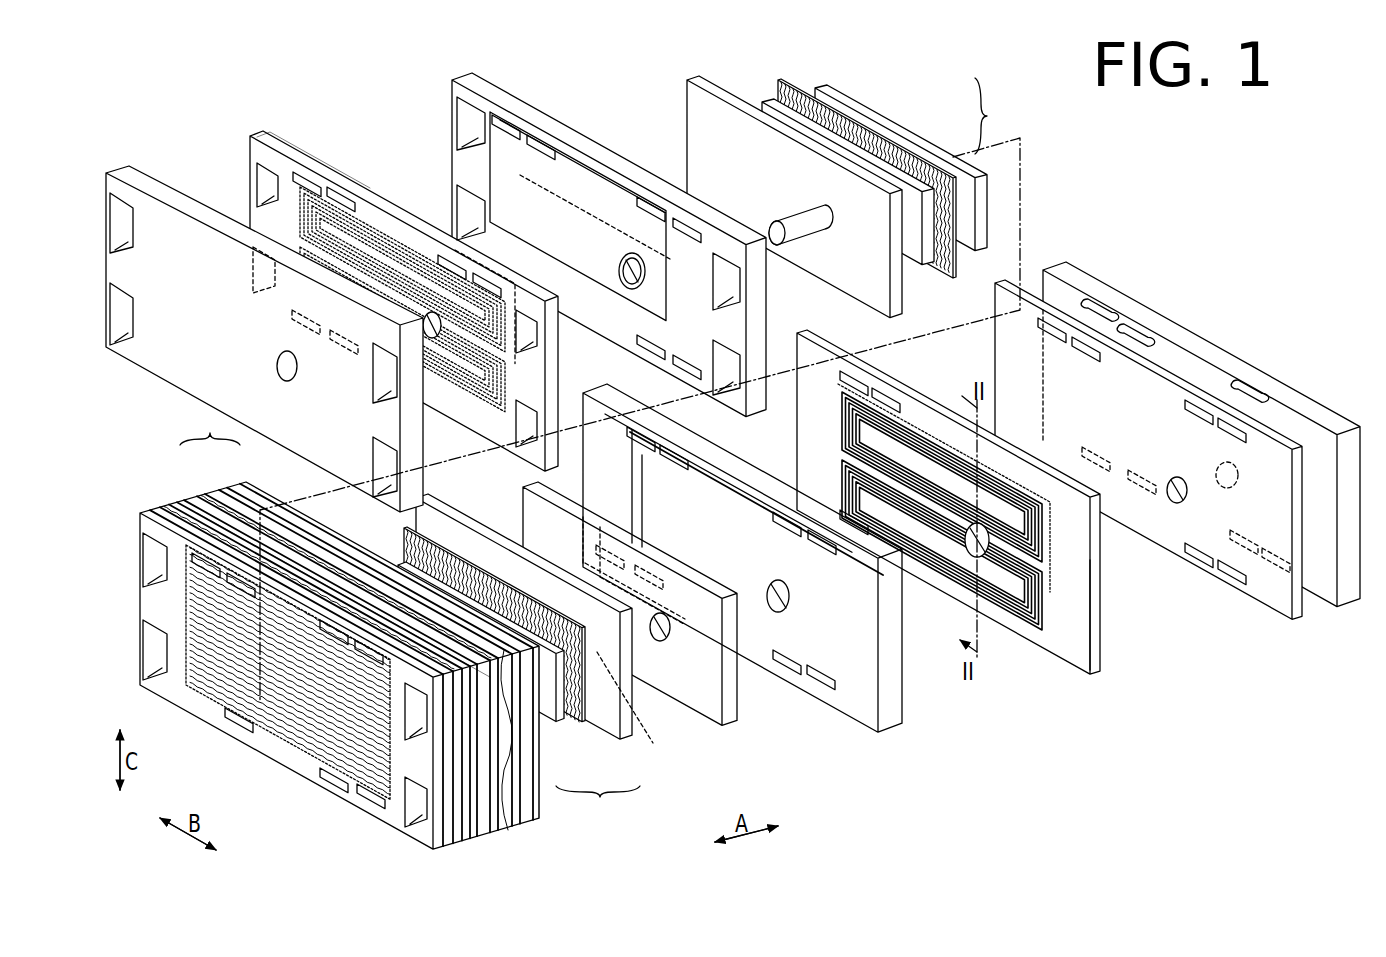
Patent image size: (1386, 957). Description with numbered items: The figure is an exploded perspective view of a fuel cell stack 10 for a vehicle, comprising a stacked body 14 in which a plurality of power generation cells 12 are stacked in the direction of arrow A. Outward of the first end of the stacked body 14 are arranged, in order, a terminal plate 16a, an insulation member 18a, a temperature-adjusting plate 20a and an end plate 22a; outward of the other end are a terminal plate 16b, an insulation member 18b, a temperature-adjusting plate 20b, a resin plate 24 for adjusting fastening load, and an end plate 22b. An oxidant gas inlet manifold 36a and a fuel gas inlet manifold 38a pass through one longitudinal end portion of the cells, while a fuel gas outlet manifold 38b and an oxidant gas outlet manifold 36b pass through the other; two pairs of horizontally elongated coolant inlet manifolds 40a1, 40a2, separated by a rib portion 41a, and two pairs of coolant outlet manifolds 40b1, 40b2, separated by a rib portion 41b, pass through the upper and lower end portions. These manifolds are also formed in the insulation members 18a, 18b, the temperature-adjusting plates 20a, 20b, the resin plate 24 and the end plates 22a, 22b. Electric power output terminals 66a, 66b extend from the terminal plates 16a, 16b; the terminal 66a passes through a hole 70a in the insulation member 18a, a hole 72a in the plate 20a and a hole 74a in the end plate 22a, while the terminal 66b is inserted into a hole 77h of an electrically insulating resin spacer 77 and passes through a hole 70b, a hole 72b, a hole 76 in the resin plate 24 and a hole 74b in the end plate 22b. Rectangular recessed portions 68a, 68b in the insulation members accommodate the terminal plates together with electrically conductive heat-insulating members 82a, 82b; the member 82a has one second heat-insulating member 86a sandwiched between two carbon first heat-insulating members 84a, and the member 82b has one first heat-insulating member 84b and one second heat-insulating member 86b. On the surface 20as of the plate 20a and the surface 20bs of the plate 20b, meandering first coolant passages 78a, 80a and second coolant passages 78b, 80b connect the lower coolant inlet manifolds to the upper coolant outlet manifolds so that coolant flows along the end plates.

The fuel cell stack 10 is at (1230, 178).
The power generation cell 12 is at (224, 488).
The stacked body 14 is at (210, 426).
The terminal plate 16a is at (684, 93).
The terminal plate 16b is at (632, 745).
The insulation member 18a is at (448, 92).
The insulation member 18b is at (884, 738).
The temperature-adjusting plate 20a is at (250, 132).
The surface of temperature-adjusting plate 20as is at (262, 151).
The temperature-adjusting plate 20b is at (1098, 680).
The surface of temperature-adjusting plate 20bs is at (1085, 642).
The end plate 22a is at (113, 170).
The end plate 22b is at (1340, 612).
The resin plate 24 is at (1295, 625).
The oxidant gas inlet manifold 36a is at (125, 212).
The oxidant gas outlet manifold 36b is at (375, 462).
The fuel gas inlet manifold 38a is at (462, 214).
The fuel gas outlet manifold 38b is at (540, 336).
The coolant inlet manifold 40a1 is at (303, 172).
The coolant inlet manifold 40a2 is at (342, 190).
The coolant outlet manifold 40b1 is at (452, 275).
The coolant outlet manifold 40b2 is at (487, 298).
The rib portion 41a is at (323, 192).
The rib portion 41b is at (470, 285).
The electric power output terminal 66a is at (792, 224).
The electric power output terminal 66b is at (634, 712).
The recessed portion 68a is at (515, 175).
The recessed portion 68b is at (768, 520).
The hole 70a is at (632, 256).
The hole 70b is at (770, 588).
The hole 72a is at (425, 335).
The hole 72b is at (972, 557).
The hole 74a is at (277, 368).
The hole 74b is at (1232, 486).
The hole 76 is at (1177, 477).
The resin spacer 77 is at (721, 732).
The hole 77h is at (660, 642).
The first coolant passage 78a is at (410, 248).
The second coolant passage 78b is at (918, 428).
The first coolant passage 80a is at (515, 370).
The second coolant passage 80b is at (948, 598).
The electrically-conductive heat-insulating member 82a is at (995, 116).
The electrically-conductive heat-insulating member 82b is at (598, 801).
The first heat-insulating member 84a is at (882, 168).
The first heat-insulating member 84b is at (556, 720).
The second heat-insulating member 86a is at (890, 140).
The second heat-insulating member 86b is at (575, 720).